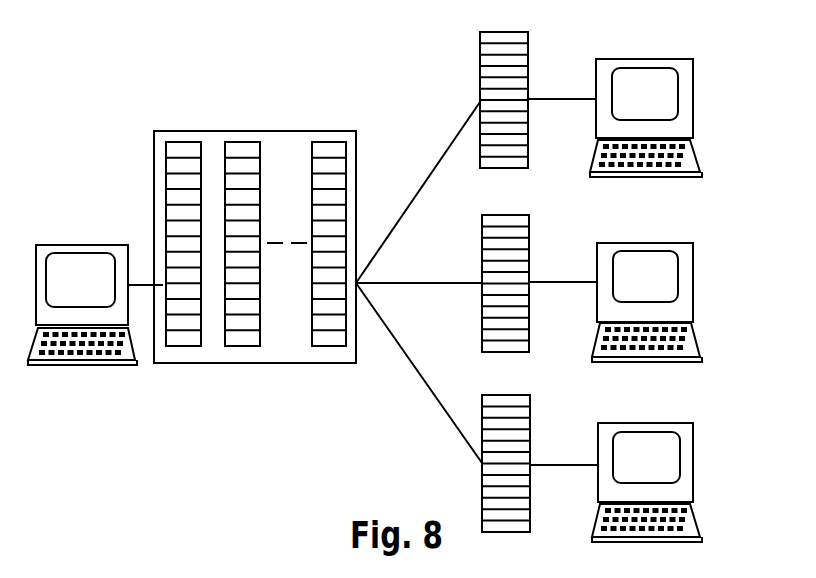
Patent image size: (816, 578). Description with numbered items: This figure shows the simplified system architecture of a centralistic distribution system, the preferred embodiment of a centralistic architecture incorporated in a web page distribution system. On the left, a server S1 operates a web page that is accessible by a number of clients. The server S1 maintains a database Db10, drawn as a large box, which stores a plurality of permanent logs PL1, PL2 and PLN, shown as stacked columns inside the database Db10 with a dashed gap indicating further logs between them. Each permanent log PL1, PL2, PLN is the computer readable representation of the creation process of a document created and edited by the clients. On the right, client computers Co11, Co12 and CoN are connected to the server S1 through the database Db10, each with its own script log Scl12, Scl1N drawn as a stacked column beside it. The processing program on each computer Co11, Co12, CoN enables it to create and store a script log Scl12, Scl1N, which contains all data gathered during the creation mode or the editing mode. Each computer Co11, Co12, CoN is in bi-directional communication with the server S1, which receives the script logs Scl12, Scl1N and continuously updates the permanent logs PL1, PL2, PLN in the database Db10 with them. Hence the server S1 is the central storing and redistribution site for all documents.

The database Db10 is at (238, 364).
The permanent log PL1 is at (181, 148).
The permanent log PL2 is at (245, 148).
The permanent log PLN is at (330, 147).
The server S1 is at (66, 366).
The script log Scl12 is at (528, 47).
The script log Scl1N is at (530, 423).
The computer Co11 is at (678, 96).
The computer Co12 is at (678, 275).
The computer CoN is at (680, 457).